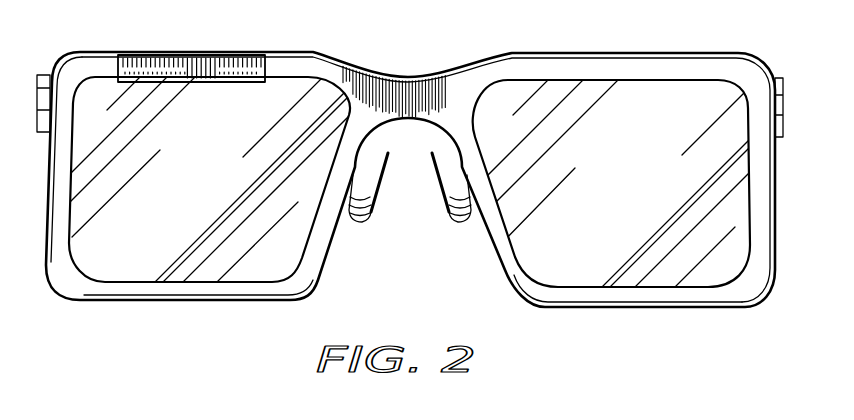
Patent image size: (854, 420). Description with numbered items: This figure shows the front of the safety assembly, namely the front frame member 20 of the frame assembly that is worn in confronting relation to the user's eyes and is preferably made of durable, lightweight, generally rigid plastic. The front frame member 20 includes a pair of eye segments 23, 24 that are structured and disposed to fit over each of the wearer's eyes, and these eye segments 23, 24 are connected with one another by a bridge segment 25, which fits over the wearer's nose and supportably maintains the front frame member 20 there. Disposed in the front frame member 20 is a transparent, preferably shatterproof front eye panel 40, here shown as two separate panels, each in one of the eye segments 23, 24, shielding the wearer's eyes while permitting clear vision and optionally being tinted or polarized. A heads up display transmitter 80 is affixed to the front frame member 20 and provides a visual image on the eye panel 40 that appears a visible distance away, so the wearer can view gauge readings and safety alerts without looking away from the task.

The front frame member 20 is at (667, 49).
The eye segment 23 is at (181, 289).
The eye segment 24 is at (612, 297).
The bridge segment 25 is at (410, 88).
The front eye panel 40 is at (214, 186).
The heads up display transmitter 80 is at (189, 66).